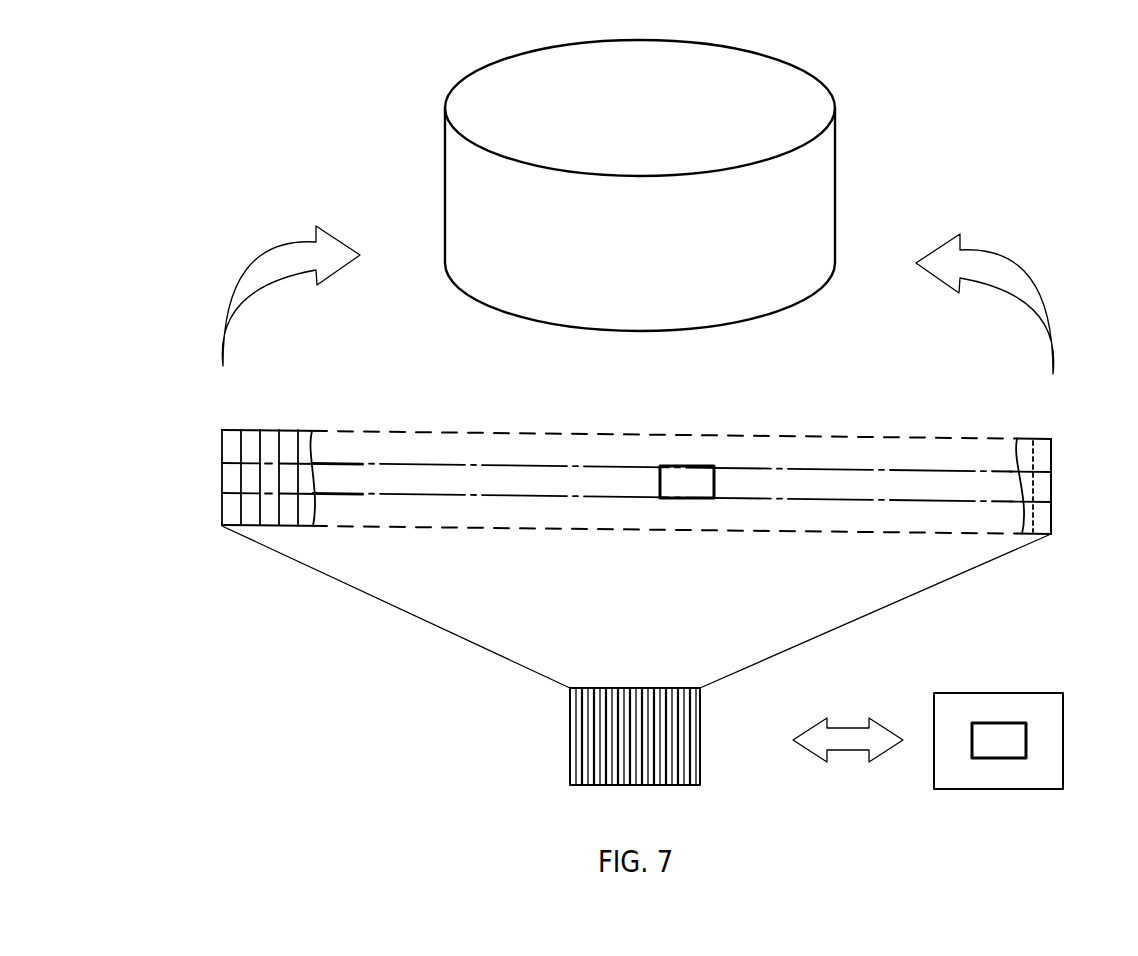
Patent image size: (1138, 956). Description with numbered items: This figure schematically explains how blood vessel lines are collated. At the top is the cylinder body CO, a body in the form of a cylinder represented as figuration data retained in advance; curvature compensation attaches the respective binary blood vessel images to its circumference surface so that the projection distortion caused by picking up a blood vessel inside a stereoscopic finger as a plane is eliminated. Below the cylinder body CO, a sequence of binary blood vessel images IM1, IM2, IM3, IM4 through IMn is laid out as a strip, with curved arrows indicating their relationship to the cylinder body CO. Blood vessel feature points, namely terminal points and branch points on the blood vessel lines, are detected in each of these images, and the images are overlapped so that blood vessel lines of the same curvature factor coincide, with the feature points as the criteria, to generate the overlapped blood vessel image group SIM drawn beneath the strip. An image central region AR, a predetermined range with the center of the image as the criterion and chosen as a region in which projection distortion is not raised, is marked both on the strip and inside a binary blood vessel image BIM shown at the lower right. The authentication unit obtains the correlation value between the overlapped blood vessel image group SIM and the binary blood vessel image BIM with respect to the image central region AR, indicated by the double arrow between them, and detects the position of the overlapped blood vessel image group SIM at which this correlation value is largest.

The cylinder body CO is at (788, 64).
The binary blood vessel image IM1 is at (228, 430).
The binary blood vessel image IM2 is at (250, 430).
The binary blood vessel image IM3 is at (272, 526).
The binary blood vessel image IM4 is at (292, 430).
The binary blood vessel image IMn is at (1046, 437).
The image central region AR is at (685, 465).
The overlapped blood vessel image group SIM is at (700, 742).
The binary blood vessel image BIM is at (1063, 745).